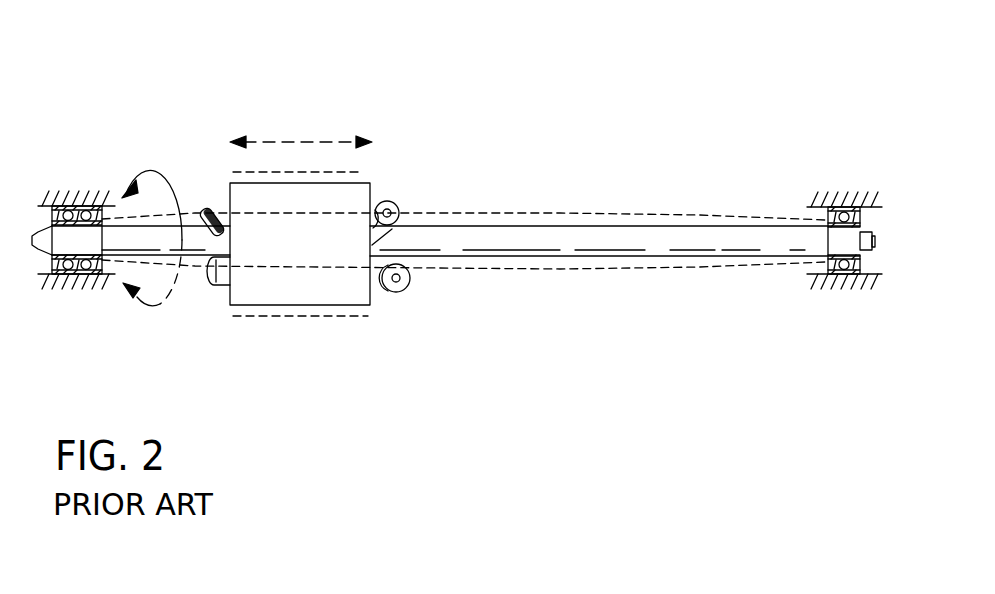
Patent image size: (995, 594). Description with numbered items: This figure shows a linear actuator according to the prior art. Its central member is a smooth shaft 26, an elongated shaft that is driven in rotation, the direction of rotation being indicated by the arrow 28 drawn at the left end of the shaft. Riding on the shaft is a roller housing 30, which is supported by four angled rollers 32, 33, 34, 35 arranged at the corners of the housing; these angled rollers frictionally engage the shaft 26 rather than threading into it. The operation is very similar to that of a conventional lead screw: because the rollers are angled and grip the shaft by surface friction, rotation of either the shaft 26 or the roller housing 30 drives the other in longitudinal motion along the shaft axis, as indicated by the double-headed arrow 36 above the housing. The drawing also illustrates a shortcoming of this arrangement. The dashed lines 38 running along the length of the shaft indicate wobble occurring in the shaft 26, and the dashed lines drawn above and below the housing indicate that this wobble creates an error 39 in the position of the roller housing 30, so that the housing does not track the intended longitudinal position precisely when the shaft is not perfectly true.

The smooth shaft 26 is at (627, 248).
The arrow 28 is at (150, 305).
The roller housing 30 is at (358, 187).
The angled roller 32 is at (210, 205).
The angled roller 33 is at (207, 288).
The angled roller 34 is at (393, 192).
The angled roller 35 is at (398, 292).
The arrow 36 is at (281, 142).
The lines 38 is at (562, 214).
The error 39 is at (303, 317).